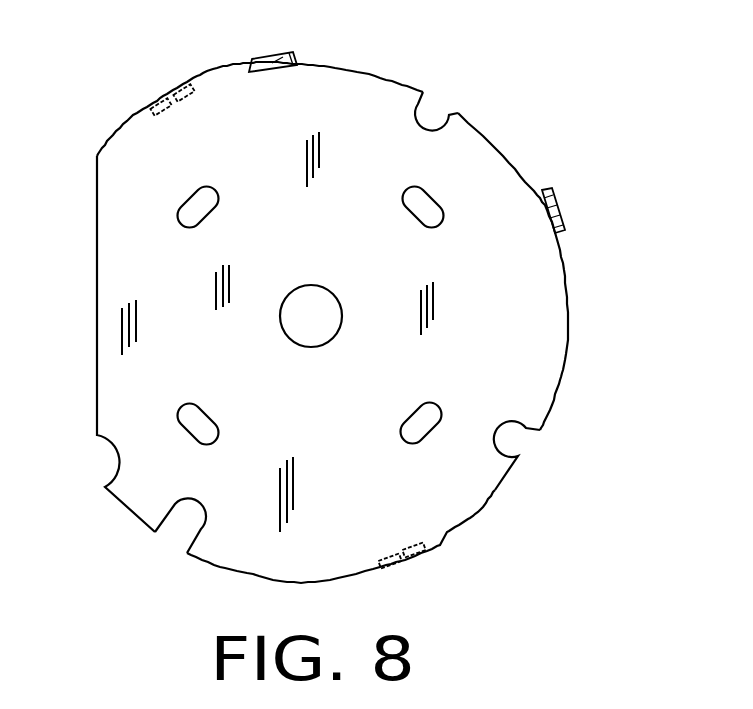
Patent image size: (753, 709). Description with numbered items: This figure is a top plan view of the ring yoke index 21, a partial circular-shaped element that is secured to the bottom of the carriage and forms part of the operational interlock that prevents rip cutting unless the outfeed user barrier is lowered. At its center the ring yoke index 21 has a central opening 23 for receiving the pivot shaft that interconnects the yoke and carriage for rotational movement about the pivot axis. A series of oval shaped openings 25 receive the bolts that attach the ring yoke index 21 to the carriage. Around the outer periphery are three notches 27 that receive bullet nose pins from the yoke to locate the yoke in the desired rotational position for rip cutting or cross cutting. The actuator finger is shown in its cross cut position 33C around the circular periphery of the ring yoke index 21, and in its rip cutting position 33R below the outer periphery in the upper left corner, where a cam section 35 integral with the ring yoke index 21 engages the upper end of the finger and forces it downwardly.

The ring yoke index 21 is at (507, 272).
The central opening 23 is at (338, 303).
The oval shaped openings 25 is at (437, 204).
The notches 27 is at (453, 113).
The rip cutting position of finger 33R is at (173, 93).
The cross cut position of finger 33C is at (560, 210).
The cam section 35 is at (297, 55).